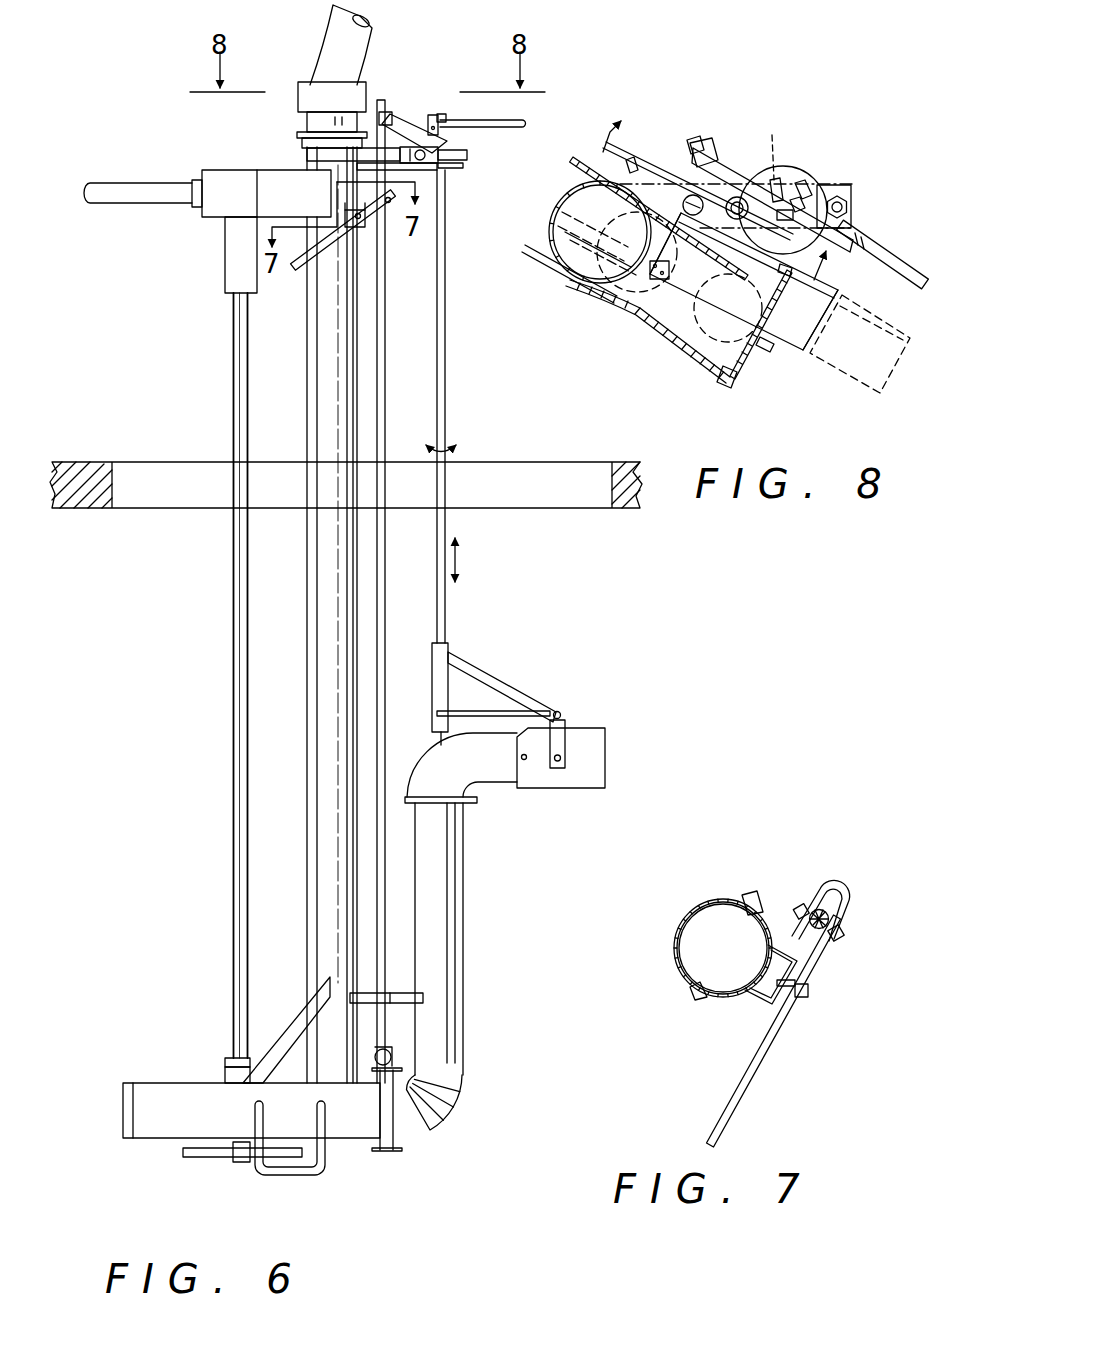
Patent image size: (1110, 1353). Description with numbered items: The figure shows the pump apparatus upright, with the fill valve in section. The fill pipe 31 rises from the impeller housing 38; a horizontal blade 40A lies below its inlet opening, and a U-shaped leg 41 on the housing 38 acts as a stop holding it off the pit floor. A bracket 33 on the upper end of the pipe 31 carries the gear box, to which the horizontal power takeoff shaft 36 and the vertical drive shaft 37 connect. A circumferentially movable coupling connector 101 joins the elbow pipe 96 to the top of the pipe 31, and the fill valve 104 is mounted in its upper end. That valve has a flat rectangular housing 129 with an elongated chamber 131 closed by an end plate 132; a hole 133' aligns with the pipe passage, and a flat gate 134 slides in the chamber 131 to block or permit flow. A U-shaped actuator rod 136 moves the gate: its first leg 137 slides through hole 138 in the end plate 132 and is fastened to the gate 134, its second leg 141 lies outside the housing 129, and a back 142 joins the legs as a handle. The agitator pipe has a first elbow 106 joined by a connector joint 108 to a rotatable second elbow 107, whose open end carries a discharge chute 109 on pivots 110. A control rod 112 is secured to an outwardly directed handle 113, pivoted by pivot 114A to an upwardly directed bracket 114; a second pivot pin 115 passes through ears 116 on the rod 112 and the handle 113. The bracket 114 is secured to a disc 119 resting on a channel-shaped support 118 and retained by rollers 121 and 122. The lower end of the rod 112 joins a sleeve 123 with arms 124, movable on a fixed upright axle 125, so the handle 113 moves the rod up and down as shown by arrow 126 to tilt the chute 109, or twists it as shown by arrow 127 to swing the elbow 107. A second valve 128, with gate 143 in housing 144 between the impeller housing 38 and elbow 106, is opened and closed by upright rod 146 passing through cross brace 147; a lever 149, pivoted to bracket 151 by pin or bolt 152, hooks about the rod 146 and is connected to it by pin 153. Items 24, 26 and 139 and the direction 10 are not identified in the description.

In FIG. 6, the elbow pipe 96 is at (332, 45).
In FIG. 6, the coupling connector 101 is at (322, 90).
In FIG. 6, the fill valve 104 is at (295, 153).
In FIG. 6, the pivot 114A is at (388, 112).
In FIG. 8, the pivot 114A is at (718, 142).
In FIG. 6, the bracket 114 is at (409, 131).
In FIG. 8, the bracket 114 is at (752, 158).
In FIG. 6, the second pivot pin 115 is at (442, 114).
In FIG. 8, the second pivot pin 115 is at (806, 186).
In FIG. 6, the ears 116 is at (432, 114).
In FIG. 8, the ears 116 is at (808, 195).
In FIG. 6, the handle 113 is at (499, 128).
In FIG. 8, the handle 113 is at (875, 252).
In FIG. 6, the power takeoff shaft 36 is at (122, 188).
In FIG. 6, the bracket 33 is at (220, 200).
In FIG. 6, the bracket 151 is at (345, 212).
In FIG. 7, the bracket 151 is at (770, 1005).
In FIG. 6, the pin or bolt 152 is at (360, 218).
In FIG. 7, the pin or bolt 152 is at (810, 993).
In FIG. 6, the pin 153 is at (390, 203).
In FIG. 7, the pin 153 is at (848, 937).
In FIG. 6, the lever 149 is at (296, 272).
In FIG. 7, the lever 149 is at (745, 1093).
In FIG. 6, the drive shaft 37 is at (238, 398).
In FIG. 6, the discharge pipe 31 is at (329, 414).
In FIG. 8, the discharge pipe 31 is at (545, 203).
In FIG. 7, the discharge pipe 31 is at (671, 936).
In FIG. 6, the upright rod 146 is at (382, 873).
In FIG. 8, the upright rod 146 is at (659, 218).
In FIG. 7, the upright rod 146 is at (833, 900).
In FIG. 6, the control rod 112 is at (447, 403).
In FIG. 8, the control rod 112 is at (777, 156).
In FIG. 6, the arrow 127 is at (458, 448).
In FIG. 6, the arrow 126 is at (458, 554).
In FIG. 6, the deck 26 is at (346, 488).
In FIG. 6, the deck section 24 is at (84, 497).
In FIG. 6, the sleeve 123 is at (436, 672).
In FIG. 6, the arms 124 is at (512, 690).
In FIG. 6, the fixed upright axle 125 is at (437, 741).
In FIG. 6, the second elbow 107 is at (436, 770).
In FIG. 6, the connector joint 108 is at (470, 805).
In FIG. 6, the discharge chute 109 is at (583, 773).
In FIG. 6, the pivots 110 is at (526, 761).
In FIG. 6, the first elbow 106 is at (457, 918).
In FIG. 6, the cross brace 147 is at (425, 997).
In FIG. 6, the gate 143 is at (396, 1062).
In FIG. 6, the housing 144 is at (373, 1152).
In FIG. 6, the second valve 128 is at (405, 1137).
In FIG. 6, the housing 38 is at (150, 1110).
In FIG. 6, the U-shaped leg 41 is at (306, 1180).
In FIG. 6, the horizontal blade 40A is at (212, 1160).
In FIG. 8, the hole 133' is at (579, 266).
In FIG. 8, the gate 134 is at (622, 287).
In FIG. 8, the housing 129 is at (705, 360).
In FIG. 8, the end plate 132 is at (735, 388).
In FIG. 8, the chamber 131 is at (680, 318).
In FIG. 8, the end plate 139 is at (655, 292).
In FIG. 8, the second leg 141 is at (845, 290).
In FIG. 8, the first leg 137 is at (780, 350).
In FIG. 8, the hole 138 is at (767, 352).
In FIG. 8, the actuator rod 136 is at (895, 361).
In FIG. 8, the back 142 is at (810, 352).
In FIG. 8, the roller 122 is at (690, 195).
In FIG. 8, the direction of movement 10 is at (722, 197).
In FIG. 8, the disc 119 is at (791, 168).
In FIG. 8, the support 118 is at (840, 185).
In FIG. 8, the roller 121 is at (851, 200).